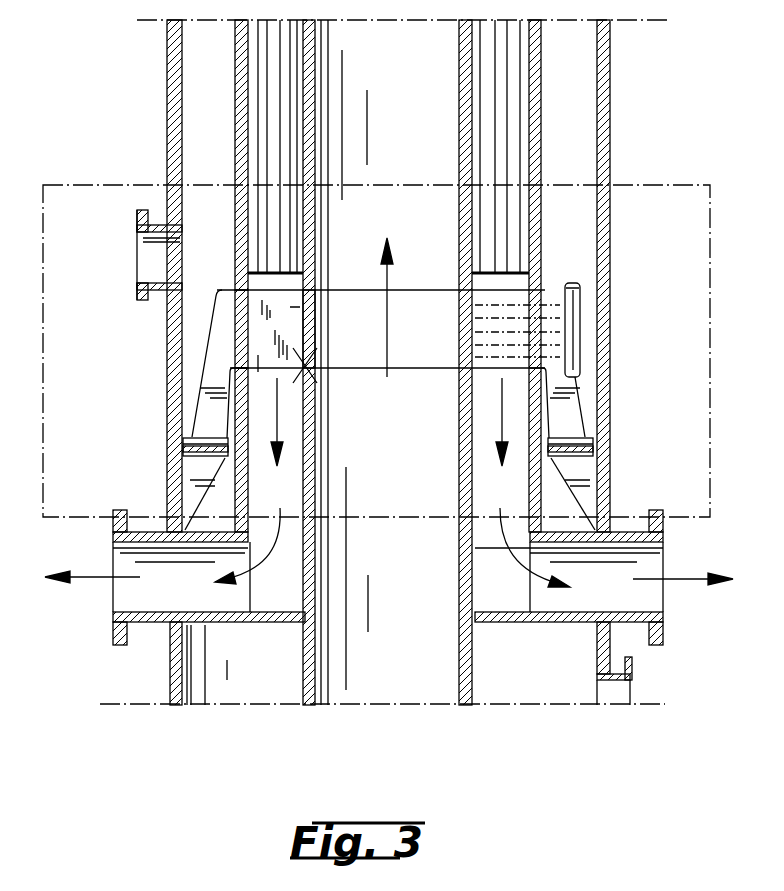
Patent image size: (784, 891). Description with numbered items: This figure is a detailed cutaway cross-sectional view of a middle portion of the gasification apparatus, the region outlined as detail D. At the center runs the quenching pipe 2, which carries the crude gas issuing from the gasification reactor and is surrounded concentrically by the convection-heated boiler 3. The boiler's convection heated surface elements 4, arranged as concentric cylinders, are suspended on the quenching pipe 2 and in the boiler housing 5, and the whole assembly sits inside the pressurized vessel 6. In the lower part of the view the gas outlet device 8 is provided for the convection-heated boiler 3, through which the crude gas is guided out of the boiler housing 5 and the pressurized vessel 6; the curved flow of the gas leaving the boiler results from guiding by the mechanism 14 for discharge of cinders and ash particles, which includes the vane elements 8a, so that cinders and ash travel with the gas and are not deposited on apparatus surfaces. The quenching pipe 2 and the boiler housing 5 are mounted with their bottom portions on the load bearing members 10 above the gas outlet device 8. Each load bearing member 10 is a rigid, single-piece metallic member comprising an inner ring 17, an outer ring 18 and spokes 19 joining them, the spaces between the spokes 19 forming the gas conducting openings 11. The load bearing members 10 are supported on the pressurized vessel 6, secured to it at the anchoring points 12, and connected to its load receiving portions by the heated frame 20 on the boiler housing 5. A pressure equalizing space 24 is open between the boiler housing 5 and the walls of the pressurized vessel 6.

The quenching pipe 2 is at (460, 668).
The convection-heated boiler 3 is at (518, 283).
The convection heated surface elements 4 is at (265, 115).
The boiler housing 5 is at (532, 170).
The pressurized vessel 6 is at (610, 300).
The gas outlet device 8 is at (125, 595).
The vane elements 8a is at (278, 583).
The load bearing members 10 is at (225, 326).
The gas conducting openings 11 is at (317, 392).
The anchoring points 12 is at (195, 472).
The mechanism for discharge of cinders and/or ash particles 14 is at (499, 590).
The inner ring 17 is at (312, 333).
The outer ring 18 is at (240, 352).
The spokes 19 is at (315, 296).
The heated frame 20 is at (207, 405).
The pressure equalizing space 24 is at (587, 65).
The detail region D is at (57, 183).